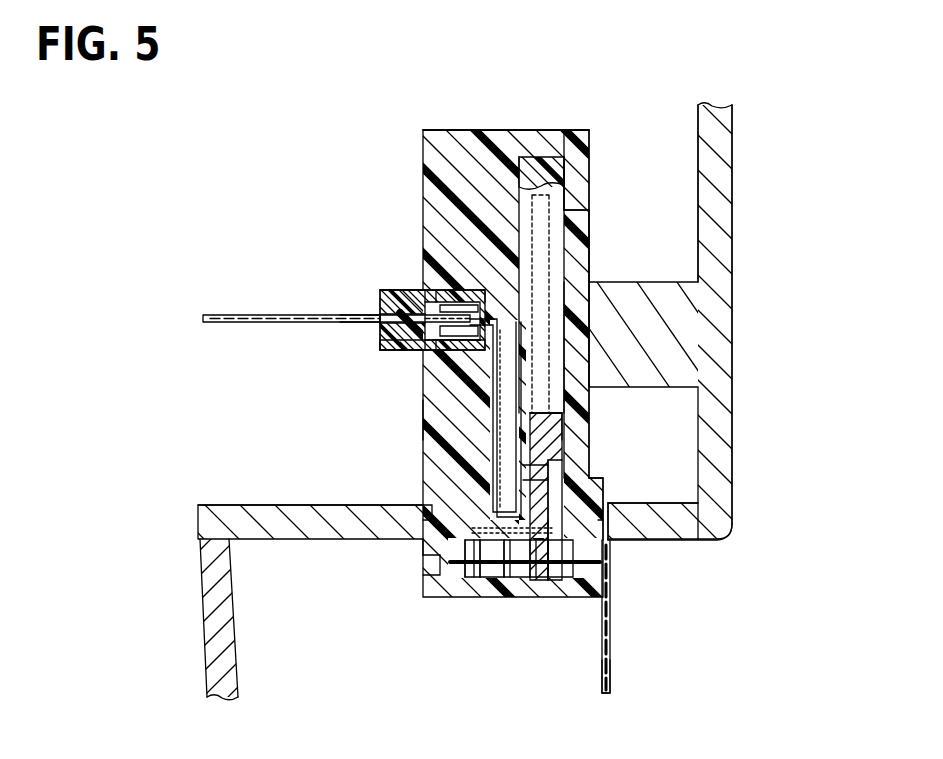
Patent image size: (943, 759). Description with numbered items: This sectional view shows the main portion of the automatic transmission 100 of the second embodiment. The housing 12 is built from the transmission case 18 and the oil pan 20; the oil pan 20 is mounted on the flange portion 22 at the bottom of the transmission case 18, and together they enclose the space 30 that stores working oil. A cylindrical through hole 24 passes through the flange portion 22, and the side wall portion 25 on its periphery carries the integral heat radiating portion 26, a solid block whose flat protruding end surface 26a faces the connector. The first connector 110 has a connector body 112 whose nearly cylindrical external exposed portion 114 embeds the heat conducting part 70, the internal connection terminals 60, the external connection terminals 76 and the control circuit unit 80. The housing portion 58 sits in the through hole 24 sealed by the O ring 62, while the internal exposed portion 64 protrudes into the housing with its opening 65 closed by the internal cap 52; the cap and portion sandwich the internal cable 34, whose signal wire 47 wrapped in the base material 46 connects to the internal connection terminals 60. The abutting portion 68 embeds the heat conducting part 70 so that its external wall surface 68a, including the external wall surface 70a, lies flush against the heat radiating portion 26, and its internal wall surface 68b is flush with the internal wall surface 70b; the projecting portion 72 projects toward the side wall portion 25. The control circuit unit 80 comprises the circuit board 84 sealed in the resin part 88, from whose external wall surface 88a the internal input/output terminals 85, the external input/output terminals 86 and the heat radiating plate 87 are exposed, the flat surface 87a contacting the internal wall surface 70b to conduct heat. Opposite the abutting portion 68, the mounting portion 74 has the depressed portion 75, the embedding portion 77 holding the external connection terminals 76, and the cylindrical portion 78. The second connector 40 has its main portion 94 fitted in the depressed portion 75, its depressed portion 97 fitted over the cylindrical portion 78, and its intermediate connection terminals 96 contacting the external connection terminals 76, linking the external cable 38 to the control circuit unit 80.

The automatic transmission 100 is at (328, 100).
The control circuit unit 80 is at (541, 152).
The first connector 110 is at (583, 126).
The abutting portion 68 is at (592, 176).
The external wall surface of the abutting portion 68a is at (614, 162).
The external wall surface of the heat conducting part 70a is at (598, 214).
The heat conducting part 70 is at (600, 230).
The side wall portion 25 is at (722, 212).
The heat radiating portion 26 is at (662, 290).
The protruding end surface 26a is at (590, 274).
The internal wall surface of the abutting portion 68b is at (704, 367).
The internal wall surface of the heat conducting part 70b is at (560, 318).
The external wall surface of the resin part 88a is at (679, 458).
The flat surface of the heat radiating plate 87a is at (563, 341).
The circuit board 84 is at (582, 410).
The heat radiating plate 87 is at (586, 428).
The resin part 88 is at (590, 448).
The internal input/output terminals 85 is at (563, 471).
The projecting portion 72 is at (612, 486).
The O ring 62 is at (670, 522).
The flange portion 22 is at (680, 537).
The through hole 24 is at (612, 549).
The internal connection terminals 60 is at (601, 559).
The base material 46 is at (611, 623).
The signal wire 47 is at (603, 662).
The internal cable 34 is at (567, 584).
The external connection terminals 76 is at (497, 580).
The opening 65 is at (470, 583).
The internal cap 52 is at (420, 590).
The housing 12 is at (122, 497).
The transmission case 18 is at (207, 523).
The oil pan 20 is at (210, 598).
The space 30 is at (290, 540).
The connector body 112 is at (326, 400).
The external exposed portion 114 is at (421, 422).
The housing portion 58 is at (413, 505).
The internal exposed portion 64 is at (402, 545).
The external input/output terminals 86 is at (425, 396).
The depressed portion of the main portion 97 is at (440, 362).
The main portion 94 is at (395, 346).
The intermediate connection terminals 96 is at (420, 331).
The external cable 38 is at (236, 308).
The second connector 40 is at (374, 298).
The mounting portion 74 is at (340, 183).
The embedding portion 77 is at (458, 282).
The cylindrical portion 78 is at (468, 298).
The depressed portion 75 is at (455, 305).